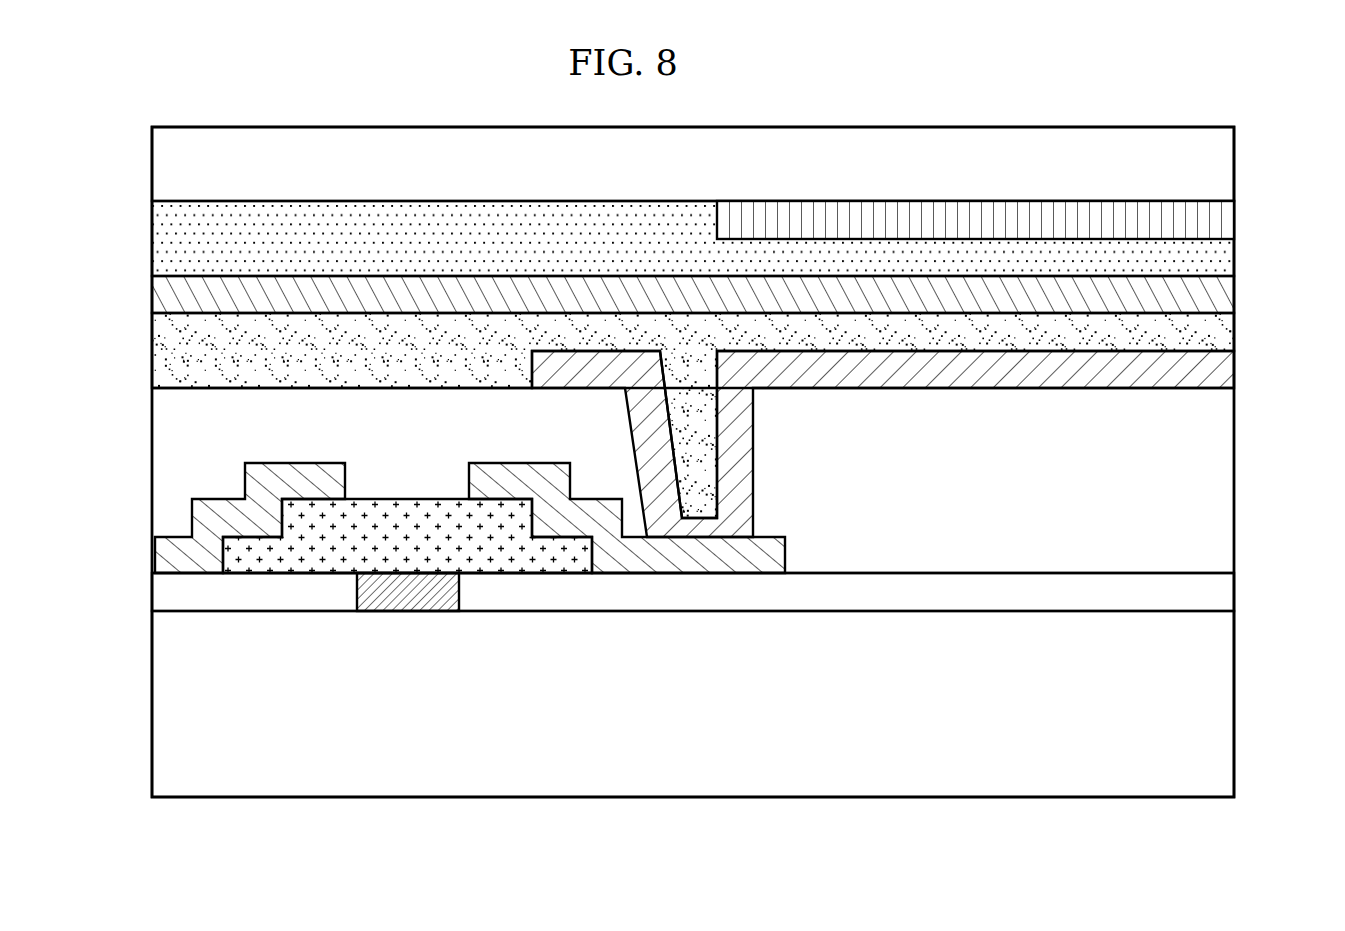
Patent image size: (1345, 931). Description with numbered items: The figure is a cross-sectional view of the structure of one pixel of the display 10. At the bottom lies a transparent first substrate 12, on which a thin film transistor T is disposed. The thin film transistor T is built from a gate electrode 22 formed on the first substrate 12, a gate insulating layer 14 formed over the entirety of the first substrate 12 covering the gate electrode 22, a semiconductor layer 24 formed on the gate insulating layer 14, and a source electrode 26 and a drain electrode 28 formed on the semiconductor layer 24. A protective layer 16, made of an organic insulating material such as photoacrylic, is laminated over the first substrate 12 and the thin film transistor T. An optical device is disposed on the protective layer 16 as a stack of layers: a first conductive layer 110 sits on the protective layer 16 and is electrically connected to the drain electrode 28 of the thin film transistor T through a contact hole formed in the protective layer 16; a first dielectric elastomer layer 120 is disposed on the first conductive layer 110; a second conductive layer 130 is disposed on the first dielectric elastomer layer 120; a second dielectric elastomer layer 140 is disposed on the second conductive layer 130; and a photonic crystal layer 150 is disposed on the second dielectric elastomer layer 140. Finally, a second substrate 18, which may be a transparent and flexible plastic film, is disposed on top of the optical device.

The display apparatus 10 is at (1110, 114).
The first substrate 12 is at (1231, 715).
The gate insulating layer 14 is at (1231, 595).
The protective layer 16 is at (1231, 481).
The second substrate 18 is at (1231, 166).
The gate electrode 22 is at (393, 601).
The semiconductor layer 24 is at (538, 562).
The source electrode 26 is at (182, 562).
The drain electrode 28 is at (627, 658).
The first conductive layer 110 is at (1231, 372).
The first dielectric elastomer layer 120 is at (1231, 332).
The second conductive layer 130 is at (1231, 298).
The second dielectric elastomer layer 140 is at (1231, 257).
The photonic crystal layer 150 is at (1231, 223).
The thin film transistor T is at (470, 678).